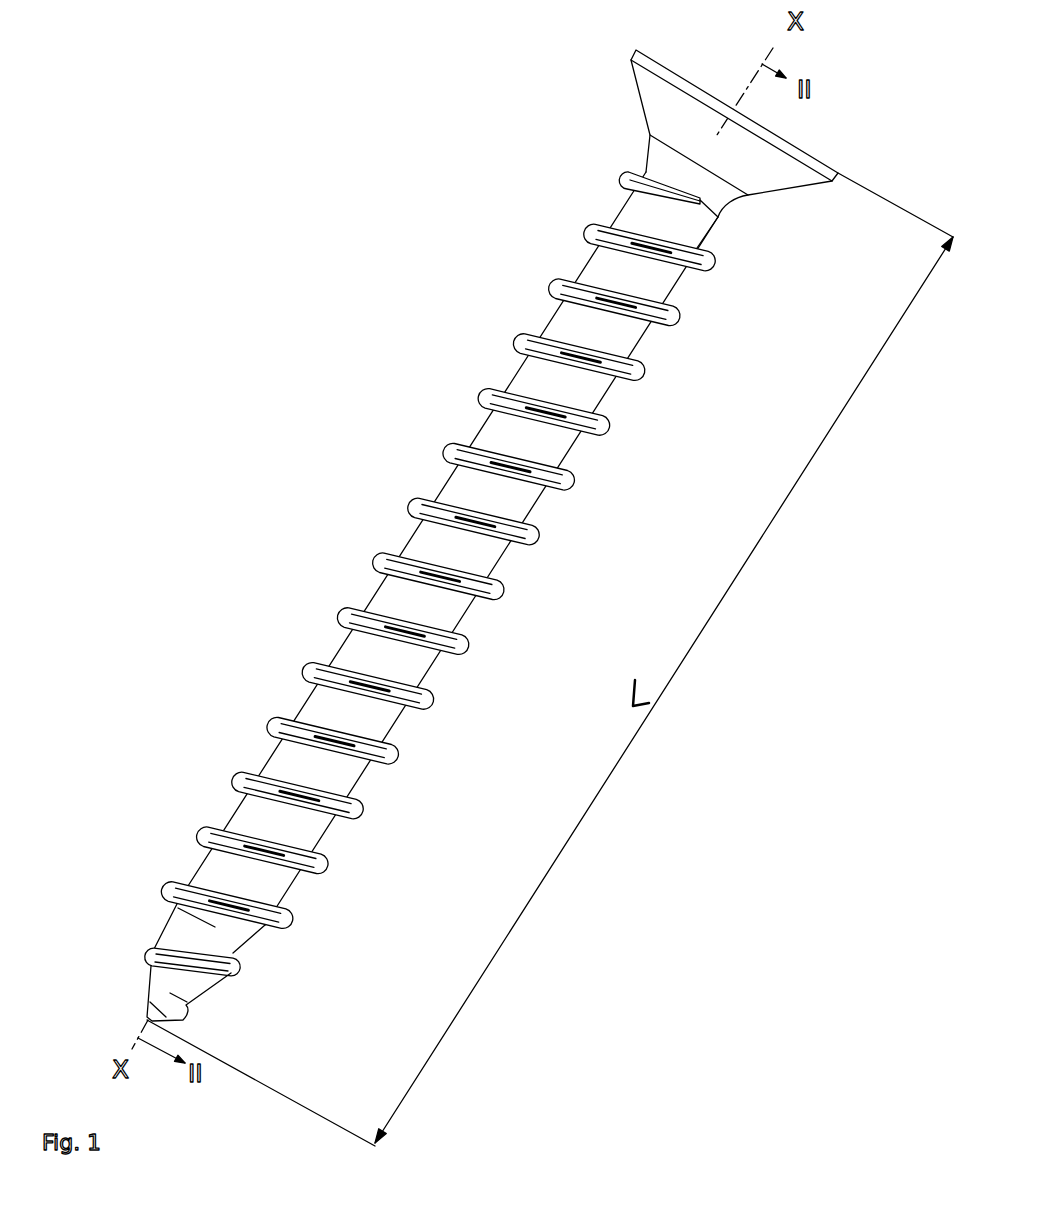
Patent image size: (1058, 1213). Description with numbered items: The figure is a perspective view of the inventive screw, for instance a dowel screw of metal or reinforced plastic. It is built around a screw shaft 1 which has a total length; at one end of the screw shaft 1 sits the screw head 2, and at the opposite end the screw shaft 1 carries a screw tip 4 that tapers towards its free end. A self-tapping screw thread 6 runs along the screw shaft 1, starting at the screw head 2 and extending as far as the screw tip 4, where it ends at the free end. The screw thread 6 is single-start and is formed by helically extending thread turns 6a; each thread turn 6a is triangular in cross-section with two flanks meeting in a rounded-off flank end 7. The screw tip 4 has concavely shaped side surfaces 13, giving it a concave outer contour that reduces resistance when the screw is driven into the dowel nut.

The screw shaft 1 is at (500, 568).
The screw head 2 is at (752, 165).
The screw tip 4 is at (170, 994).
The screw thread 6 is at (396, 502).
The thread turns 6a is at (465, 644).
The flank end 7 is at (597, 422).
The side surfaces 13 is at (248, 943).